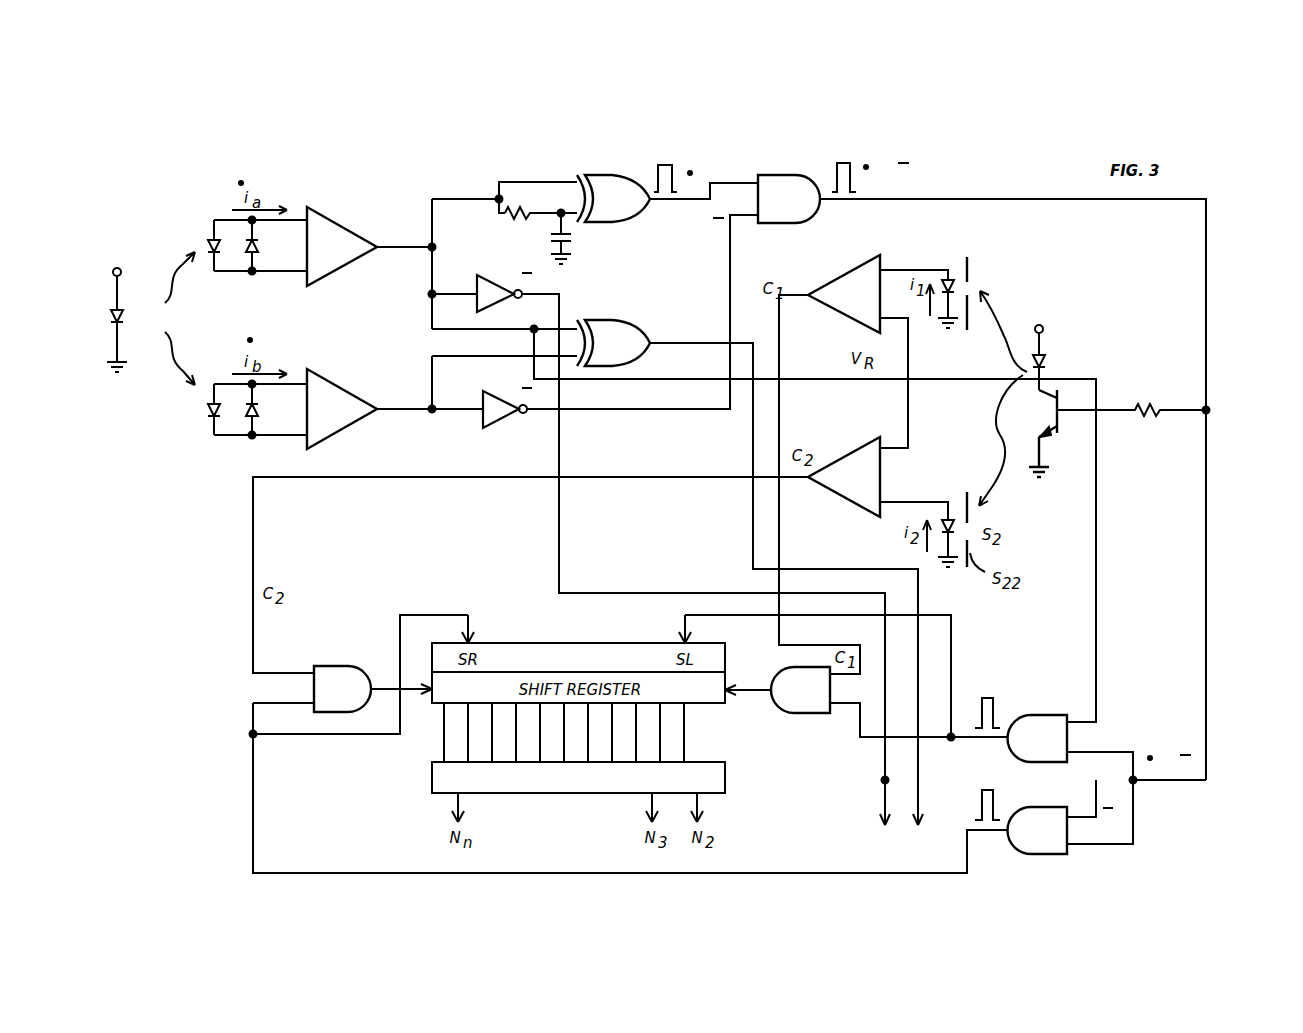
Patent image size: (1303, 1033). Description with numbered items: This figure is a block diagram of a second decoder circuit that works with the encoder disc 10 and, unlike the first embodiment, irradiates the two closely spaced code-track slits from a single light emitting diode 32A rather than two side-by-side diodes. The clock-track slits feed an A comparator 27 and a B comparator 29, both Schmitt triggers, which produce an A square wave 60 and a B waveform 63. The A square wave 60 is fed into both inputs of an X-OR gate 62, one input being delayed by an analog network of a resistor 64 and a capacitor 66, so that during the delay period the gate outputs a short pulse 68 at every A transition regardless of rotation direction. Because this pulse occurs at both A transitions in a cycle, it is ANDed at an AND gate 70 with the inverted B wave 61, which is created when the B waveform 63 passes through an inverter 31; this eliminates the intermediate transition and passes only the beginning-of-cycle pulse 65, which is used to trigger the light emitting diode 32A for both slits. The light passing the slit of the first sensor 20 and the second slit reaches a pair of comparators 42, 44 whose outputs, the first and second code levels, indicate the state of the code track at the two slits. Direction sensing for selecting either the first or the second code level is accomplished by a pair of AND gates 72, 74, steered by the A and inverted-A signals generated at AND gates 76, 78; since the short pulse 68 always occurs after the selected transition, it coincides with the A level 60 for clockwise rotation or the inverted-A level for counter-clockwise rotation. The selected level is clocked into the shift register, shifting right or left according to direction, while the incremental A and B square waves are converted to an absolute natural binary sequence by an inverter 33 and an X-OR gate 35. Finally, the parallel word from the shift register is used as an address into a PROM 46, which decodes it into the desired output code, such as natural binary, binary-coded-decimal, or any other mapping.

The rotary disc 10 is at (108, 322).
The sensor S1 20 is at (969, 248).
The A comparator 27 is at (316, 243).
The B comparator 29 is at (316, 405).
The inverter 31 is at (497, 381).
The single LED 32A is at (1048, 362).
The inverter 33 is at (497, 279).
The X-OR gate 35 is at (609, 352).
The comparator 42 is at (846, 282).
The comparator 44 is at (850, 455).
The PROM 46 is at (530, 793).
The A square wave 60 is at (381, 253).
The not-B wave 61 is at (523, 416).
The X-OR gate 62 is at (609, 208).
The B waveform 63 is at (381, 415).
The resistor 64 is at (503, 218).
The A-dot times not-B pulse 65 is at (870, 160).
The capacitor 66 is at (552, 236).
The A-dot pulse 68 is at (679, 160).
The AND gate 70 is at (773, 208).
The AND gate 72 is at (799, 699).
The AND gate 74 is at (327, 699).
The AND gate 76 is at (1035, 748).
The AND gate 78 is at (1035, 840).